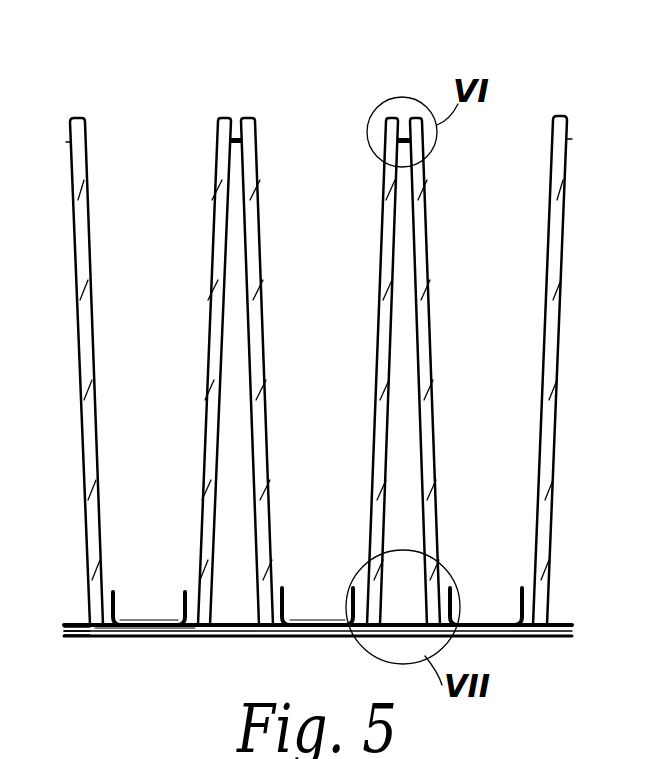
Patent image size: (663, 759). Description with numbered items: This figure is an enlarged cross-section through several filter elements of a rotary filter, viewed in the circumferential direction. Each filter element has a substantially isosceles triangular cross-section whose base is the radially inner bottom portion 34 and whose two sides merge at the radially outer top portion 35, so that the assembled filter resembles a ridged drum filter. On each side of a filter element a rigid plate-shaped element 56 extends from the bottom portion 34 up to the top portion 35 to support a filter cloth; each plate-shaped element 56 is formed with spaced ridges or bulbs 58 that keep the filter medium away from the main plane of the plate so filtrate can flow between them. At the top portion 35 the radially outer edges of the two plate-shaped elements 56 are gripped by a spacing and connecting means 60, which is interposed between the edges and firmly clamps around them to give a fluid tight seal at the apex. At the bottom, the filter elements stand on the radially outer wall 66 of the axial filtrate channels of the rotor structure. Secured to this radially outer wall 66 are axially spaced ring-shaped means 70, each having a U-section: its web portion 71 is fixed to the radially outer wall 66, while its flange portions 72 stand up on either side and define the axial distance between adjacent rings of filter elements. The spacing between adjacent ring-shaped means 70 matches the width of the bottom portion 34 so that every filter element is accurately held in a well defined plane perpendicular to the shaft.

The bottom portion 34 is at (235, 640).
The top portion 35 is at (227, 113).
The plate-shaped element 56 is at (209, 339).
The ridges or bulbs 58 is at (206, 400).
The spacing and connecting means 60 is at (253, 113).
The radially outer wall 66 is at (125, 638).
The ring-shaped means 70 is at (146, 617).
The web portion 71 is at (88, 637).
The flange portions 72 is at (116, 590).